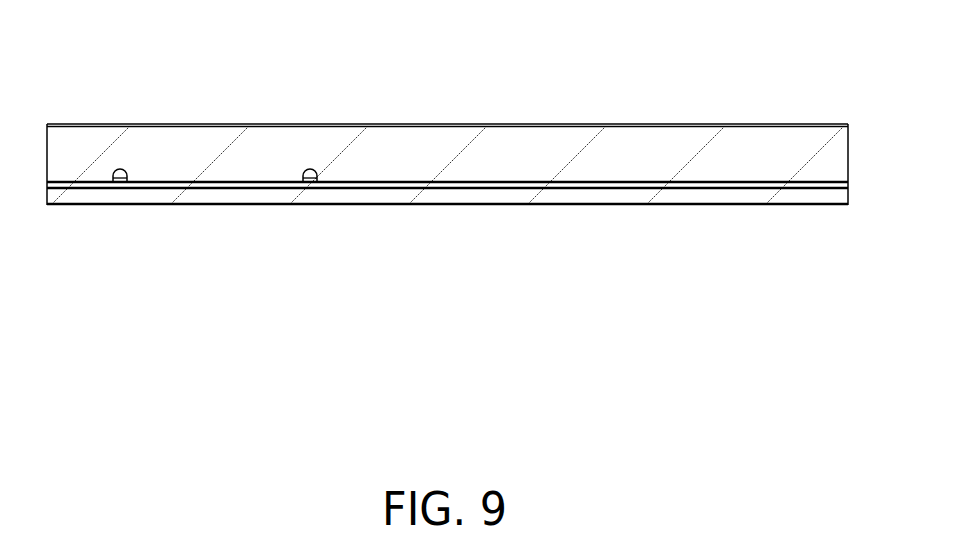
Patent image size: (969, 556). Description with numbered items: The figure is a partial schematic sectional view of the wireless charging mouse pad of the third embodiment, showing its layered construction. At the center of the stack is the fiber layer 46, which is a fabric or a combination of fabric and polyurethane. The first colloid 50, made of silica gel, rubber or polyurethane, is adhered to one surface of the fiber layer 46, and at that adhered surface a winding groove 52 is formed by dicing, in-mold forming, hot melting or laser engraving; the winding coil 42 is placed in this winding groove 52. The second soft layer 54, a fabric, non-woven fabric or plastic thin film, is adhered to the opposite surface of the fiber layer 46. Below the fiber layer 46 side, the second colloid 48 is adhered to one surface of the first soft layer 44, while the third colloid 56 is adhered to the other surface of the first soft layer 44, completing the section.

The winding coil 42 is at (120, 183).
The first soft layer 44 is at (345, 193).
The fiber layer 46 is at (598, 181).
The second colloid 48 is at (512, 189).
The first colloid 50 is at (302, 138).
The winding groove 52 is at (120, 169).
The second soft layer 54 is at (473, 124).
The third colloid 56 is at (222, 205).